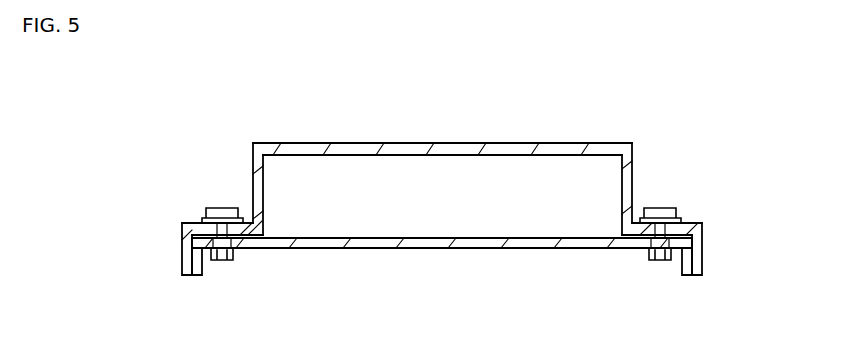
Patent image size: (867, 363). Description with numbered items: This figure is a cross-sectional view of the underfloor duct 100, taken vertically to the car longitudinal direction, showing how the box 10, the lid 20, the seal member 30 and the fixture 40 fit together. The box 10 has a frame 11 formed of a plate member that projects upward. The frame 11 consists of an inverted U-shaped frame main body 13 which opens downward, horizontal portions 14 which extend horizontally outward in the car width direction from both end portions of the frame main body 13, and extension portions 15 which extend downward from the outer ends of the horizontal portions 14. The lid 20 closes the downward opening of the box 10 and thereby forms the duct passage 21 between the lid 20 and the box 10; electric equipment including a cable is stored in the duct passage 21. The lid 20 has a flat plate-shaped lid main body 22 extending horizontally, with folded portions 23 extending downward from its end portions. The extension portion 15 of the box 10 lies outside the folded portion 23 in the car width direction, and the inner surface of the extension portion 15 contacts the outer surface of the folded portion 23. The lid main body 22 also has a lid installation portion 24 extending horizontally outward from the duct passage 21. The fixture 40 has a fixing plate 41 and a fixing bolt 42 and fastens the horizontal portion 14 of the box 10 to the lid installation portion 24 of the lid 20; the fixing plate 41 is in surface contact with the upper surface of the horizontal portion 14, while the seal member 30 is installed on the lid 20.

The underfloor duct 100 is at (509, 120).
The box 10 is at (365, 145).
The frame 11 is at (312, 150).
The frame main body 13 is at (626, 162).
The horizontal portion 14 is at (682, 230).
The extension portion 15 is at (703, 251).
The lid 20 is at (422, 249).
The duct passage 21 is at (449, 208).
The lid main body 22 is at (521, 250).
The folded portion 23 is at (685, 277).
The lid installation portion 24 is at (648, 251).
The seal member 30 is at (645, 243).
The fixture 40 is at (651, 208).
The fixing plate 41 is at (678, 212).
The fixing bolt 42 is at (658, 261).